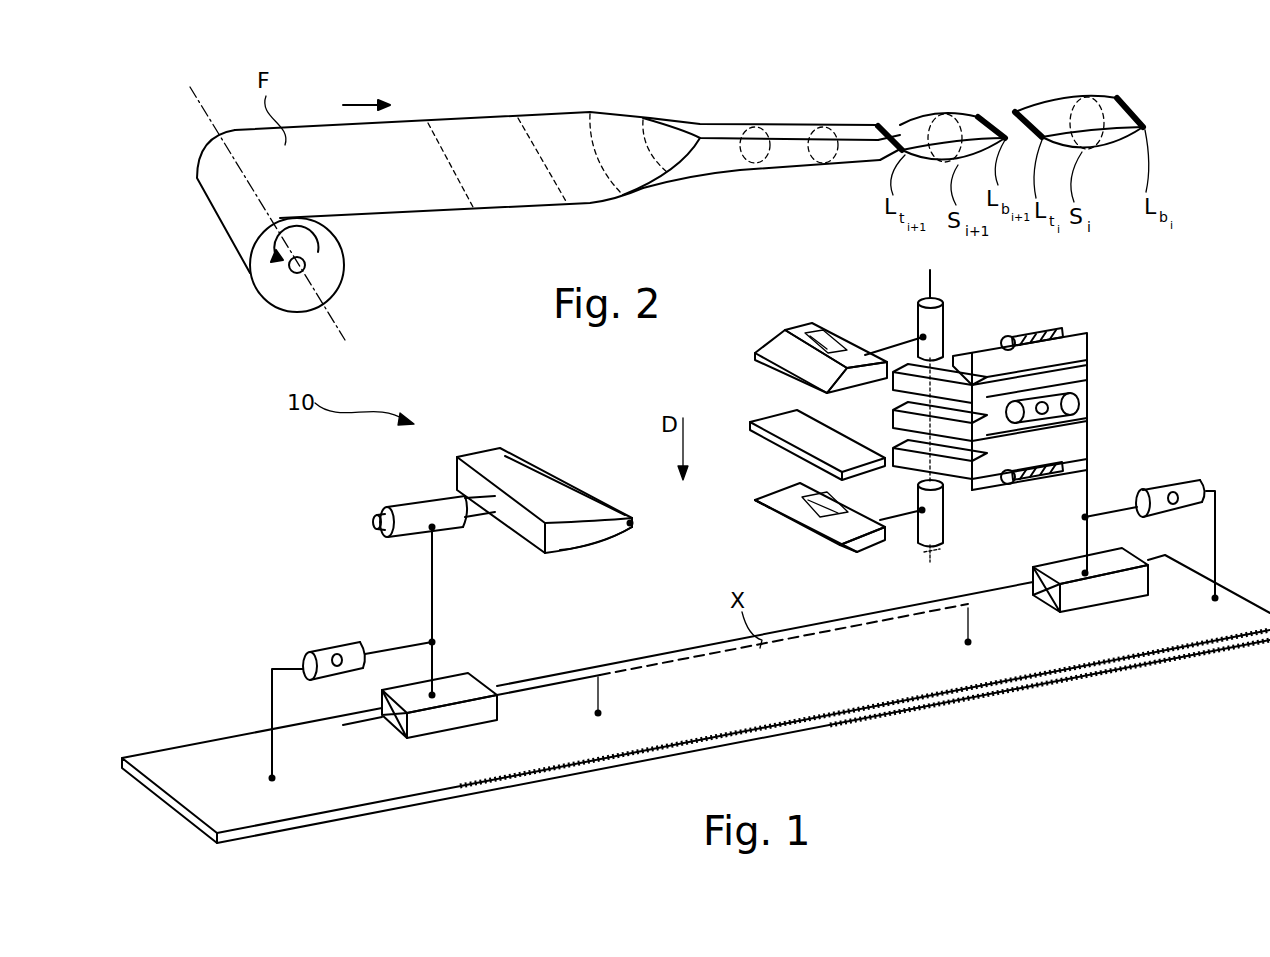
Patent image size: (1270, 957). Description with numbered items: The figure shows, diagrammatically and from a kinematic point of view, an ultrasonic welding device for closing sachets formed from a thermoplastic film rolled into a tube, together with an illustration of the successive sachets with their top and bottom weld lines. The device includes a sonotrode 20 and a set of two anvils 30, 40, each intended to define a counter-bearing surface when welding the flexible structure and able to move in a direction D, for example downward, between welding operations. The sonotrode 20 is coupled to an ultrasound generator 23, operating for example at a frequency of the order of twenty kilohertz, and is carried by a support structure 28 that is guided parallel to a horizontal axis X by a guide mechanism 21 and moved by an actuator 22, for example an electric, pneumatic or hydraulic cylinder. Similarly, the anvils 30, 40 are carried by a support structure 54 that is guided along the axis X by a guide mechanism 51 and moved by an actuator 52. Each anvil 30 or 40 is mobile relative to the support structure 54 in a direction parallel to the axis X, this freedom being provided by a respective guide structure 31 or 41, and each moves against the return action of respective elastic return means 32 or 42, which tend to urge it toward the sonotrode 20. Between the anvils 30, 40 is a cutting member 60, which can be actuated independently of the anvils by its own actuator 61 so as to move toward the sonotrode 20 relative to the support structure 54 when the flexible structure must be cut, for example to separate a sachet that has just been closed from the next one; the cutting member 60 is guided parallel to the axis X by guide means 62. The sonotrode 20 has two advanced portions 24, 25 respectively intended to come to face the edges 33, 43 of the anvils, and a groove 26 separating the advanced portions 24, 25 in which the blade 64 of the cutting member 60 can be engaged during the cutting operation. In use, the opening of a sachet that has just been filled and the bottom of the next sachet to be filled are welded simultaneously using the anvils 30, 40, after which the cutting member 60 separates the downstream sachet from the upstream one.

The sonotrode 20 is at (573, 526).
The guide mechanism 21 is at (450, 722).
The actuator 22 is at (320, 652).
The ultrasound generator 23 is at (425, 511).
The advanced portion 24 is at (634, 520).
The advanced portion 25 is at (636, 527).
The groove 26 is at (633, 530).
The support structure 28 is at (425, 578).
The anvil 30 is at (815, 328).
The guide structure 31 is at (973, 356).
The elastic return means 32 is at (1030, 333).
The edge 33 is at (758, 358).
The anvil 40 is at (821, 539).
The guide structure 41 is at (944, 490).
The elastic return means 42 is at (1035, 482).
The edge 43 is at (762, 505).
The guide mechanism 51 is at (1105, 597).
The actuator 52 is at (1183, 486).
The support structure 54 is at (1092, 410).
The cutting member 60 is at (803, 426).
The actuator 61 is at (1090, 386).
The guide means 62 is at (1087, 460).
The blade 64 is at (768, 440).